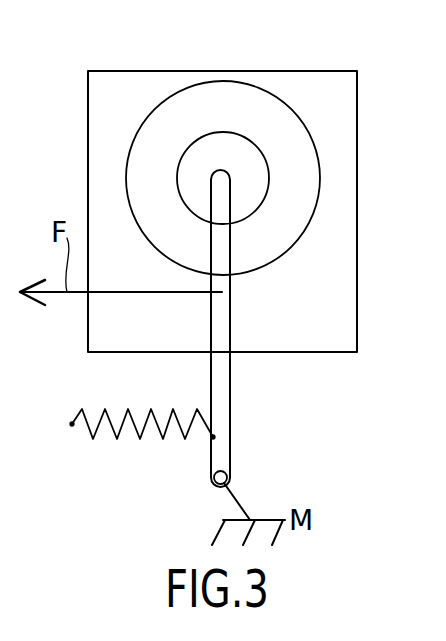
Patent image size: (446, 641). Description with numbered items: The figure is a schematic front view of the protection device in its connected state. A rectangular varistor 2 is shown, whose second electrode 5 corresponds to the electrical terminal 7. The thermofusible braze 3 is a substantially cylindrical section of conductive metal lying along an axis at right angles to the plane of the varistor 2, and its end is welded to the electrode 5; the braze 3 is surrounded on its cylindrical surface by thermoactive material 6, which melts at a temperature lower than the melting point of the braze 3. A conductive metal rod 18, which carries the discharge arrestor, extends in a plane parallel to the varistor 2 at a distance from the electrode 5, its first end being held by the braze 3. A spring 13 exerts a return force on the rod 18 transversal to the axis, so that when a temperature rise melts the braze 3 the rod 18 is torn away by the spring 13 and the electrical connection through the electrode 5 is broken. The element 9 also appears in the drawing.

The varistor 2 is at (357, 267).
The thermofusible braze 3 is at (230, 177).
The second electrode 5 is at (302, 100).
The thermoactive material 6 is at (212, 123).
The electrical terminal 7 is at (320, 313).
The pivot axis 9 is at (220, 182).
The spring 13 is at (97, 419).
The conductive metal rod 18 is at (219, 383).